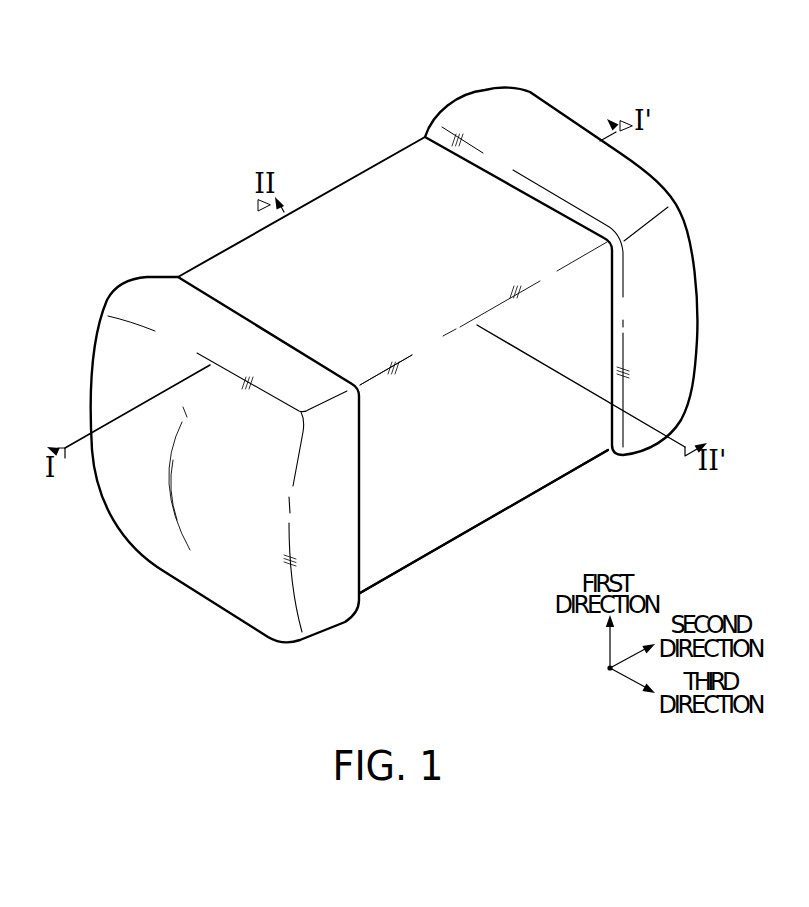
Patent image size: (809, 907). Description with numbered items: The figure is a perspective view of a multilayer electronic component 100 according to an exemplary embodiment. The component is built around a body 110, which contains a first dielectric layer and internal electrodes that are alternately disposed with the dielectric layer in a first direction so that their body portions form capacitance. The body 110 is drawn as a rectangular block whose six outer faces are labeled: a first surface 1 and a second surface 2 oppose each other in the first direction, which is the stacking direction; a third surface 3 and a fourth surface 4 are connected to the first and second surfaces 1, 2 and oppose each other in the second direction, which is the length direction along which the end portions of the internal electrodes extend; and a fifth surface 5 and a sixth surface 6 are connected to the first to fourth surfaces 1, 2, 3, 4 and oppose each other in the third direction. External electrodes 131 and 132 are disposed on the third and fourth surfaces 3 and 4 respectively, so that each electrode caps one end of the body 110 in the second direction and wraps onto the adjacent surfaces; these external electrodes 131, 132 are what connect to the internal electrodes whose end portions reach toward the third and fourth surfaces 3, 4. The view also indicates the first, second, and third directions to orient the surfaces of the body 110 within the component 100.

The multilayer electronic component 100 is at (234, 31).
The body 110 is at (393, 366).
The external electrode 131 is at (225, 433).
The external electrode 132 is at (561, 247).
The first surface 1 is at (453, 550).
The second surface 2 is at (378, 179).
The third surface 3 is at (150, 542).
The fourth surface 4 is at (560, 133).
The fifth surface 5 is at (222, 243).
The sixth surface 6 is at (515, 481).